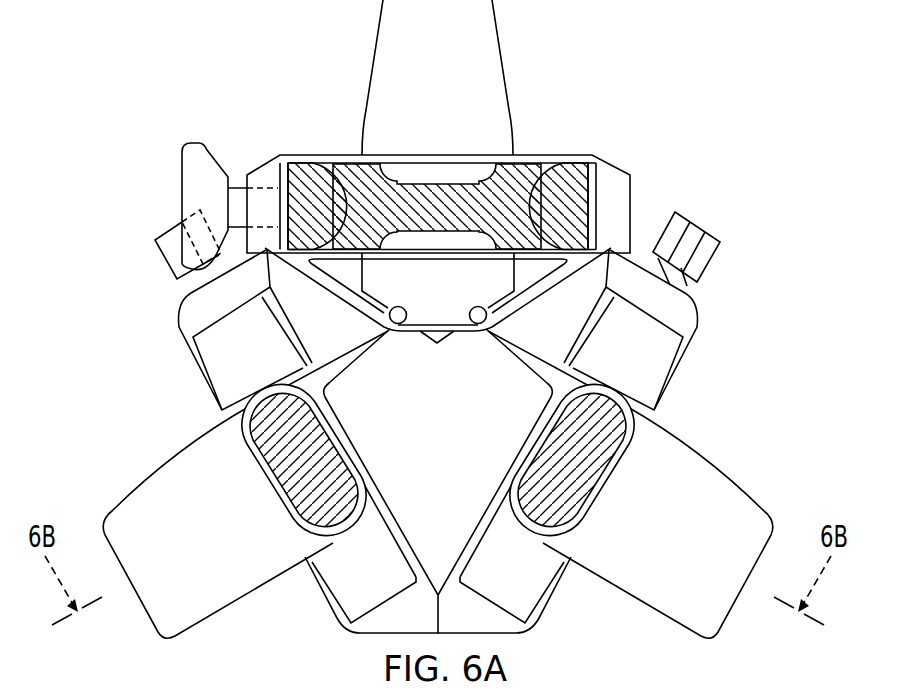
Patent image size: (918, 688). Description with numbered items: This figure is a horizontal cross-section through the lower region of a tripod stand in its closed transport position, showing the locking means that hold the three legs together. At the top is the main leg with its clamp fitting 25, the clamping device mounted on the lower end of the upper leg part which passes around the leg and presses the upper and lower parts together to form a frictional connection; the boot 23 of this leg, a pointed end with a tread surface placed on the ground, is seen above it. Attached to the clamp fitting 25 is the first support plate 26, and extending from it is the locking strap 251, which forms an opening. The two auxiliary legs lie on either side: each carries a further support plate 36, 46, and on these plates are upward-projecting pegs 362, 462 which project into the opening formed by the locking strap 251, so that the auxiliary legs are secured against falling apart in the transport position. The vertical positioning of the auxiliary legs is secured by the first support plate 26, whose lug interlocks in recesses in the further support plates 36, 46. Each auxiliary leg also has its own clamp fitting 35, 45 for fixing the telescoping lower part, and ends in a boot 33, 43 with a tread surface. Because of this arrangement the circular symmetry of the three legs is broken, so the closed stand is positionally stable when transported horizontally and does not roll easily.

The boot 23 is at (542, 60).
The clamp fitting 25 is at (619, 177).
The first support plate 26 is at (448, 298).
The locking strap 251 is at (553, 284).
The peg 462 is at (399, 324).
The peg 362 is at (477, 324).
The further support plate 46 is at (352, 350).
The further support plate 36 is at (523, 350).
The clamp fitting 45 is at (197, 311).
The clamp fitting 35 is at (678, 313).
The boot 43 is at (166, 429).
The boot 33 is at (708, 407).